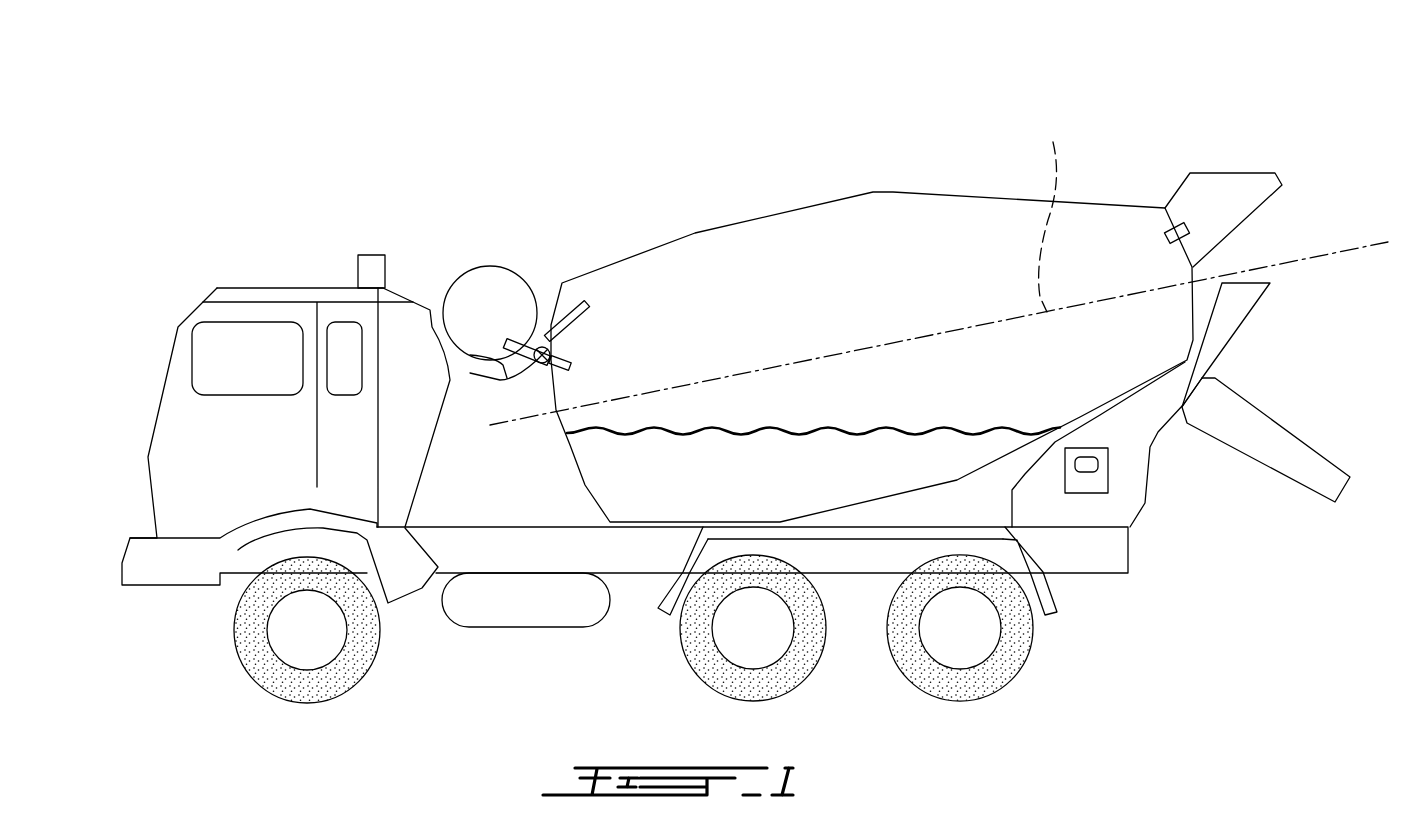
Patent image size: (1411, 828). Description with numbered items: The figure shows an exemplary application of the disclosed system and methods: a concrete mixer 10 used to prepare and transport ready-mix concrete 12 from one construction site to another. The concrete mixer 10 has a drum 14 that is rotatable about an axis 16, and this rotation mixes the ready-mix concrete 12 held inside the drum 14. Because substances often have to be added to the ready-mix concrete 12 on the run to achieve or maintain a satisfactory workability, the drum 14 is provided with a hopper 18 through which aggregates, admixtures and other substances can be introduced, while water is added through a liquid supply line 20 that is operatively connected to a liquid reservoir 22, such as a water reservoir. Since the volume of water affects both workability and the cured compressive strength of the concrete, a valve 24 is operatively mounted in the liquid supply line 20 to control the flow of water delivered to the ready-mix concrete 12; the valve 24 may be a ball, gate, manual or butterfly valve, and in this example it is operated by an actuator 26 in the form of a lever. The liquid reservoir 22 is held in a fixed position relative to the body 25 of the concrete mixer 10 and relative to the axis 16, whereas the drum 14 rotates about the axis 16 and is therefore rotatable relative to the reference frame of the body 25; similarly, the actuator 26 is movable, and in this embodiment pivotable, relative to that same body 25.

The concrete mixer 10 is at (186, 302).
The ready-mix concrete 12 is at (620, 469).
The drum 14 is at (889, 186).
The axis 16 is at (1056, 210).
The hopper 18 is at (1237, 190).
The liquid supply line 20 is at (507, 358).
The liquid reservoir 22 is at (465, 272).
The valve 24 is at (540, 363).
The body 25 is at (445, 465).
The actuator 26 is at (578, 330).